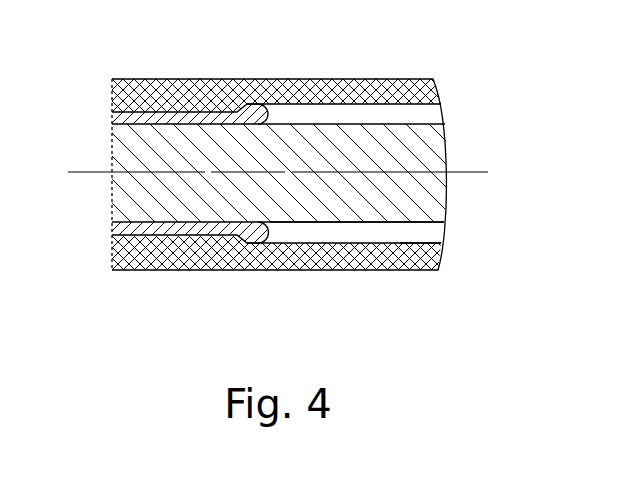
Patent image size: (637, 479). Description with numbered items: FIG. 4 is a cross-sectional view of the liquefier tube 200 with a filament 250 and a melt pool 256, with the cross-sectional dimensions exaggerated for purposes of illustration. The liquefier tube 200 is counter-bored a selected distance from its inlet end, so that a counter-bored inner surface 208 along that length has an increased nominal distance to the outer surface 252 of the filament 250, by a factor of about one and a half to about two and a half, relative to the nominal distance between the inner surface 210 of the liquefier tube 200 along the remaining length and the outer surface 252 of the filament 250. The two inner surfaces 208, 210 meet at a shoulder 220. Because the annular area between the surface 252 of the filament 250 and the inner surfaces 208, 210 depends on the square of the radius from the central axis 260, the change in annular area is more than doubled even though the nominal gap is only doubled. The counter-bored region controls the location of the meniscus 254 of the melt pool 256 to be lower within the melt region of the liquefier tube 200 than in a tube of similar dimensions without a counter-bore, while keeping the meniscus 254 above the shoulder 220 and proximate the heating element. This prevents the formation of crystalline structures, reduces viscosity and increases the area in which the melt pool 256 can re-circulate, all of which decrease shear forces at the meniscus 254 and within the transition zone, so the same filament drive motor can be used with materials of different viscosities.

The liquefier tube 200 is at (167, 306).
The counter-bored inner surface 208 is at (410, 242).
The inner surface 210 is at (127, 227).
The shoulder 220 is at (240, 108).
The filament 250 is at (430, 153).
The outer surface 252 is at (441, 228).
The meniscus 254 is at (268, 120).
The melt pool 256 is at (115, 237).
The central axis 260 is at (463, 175).